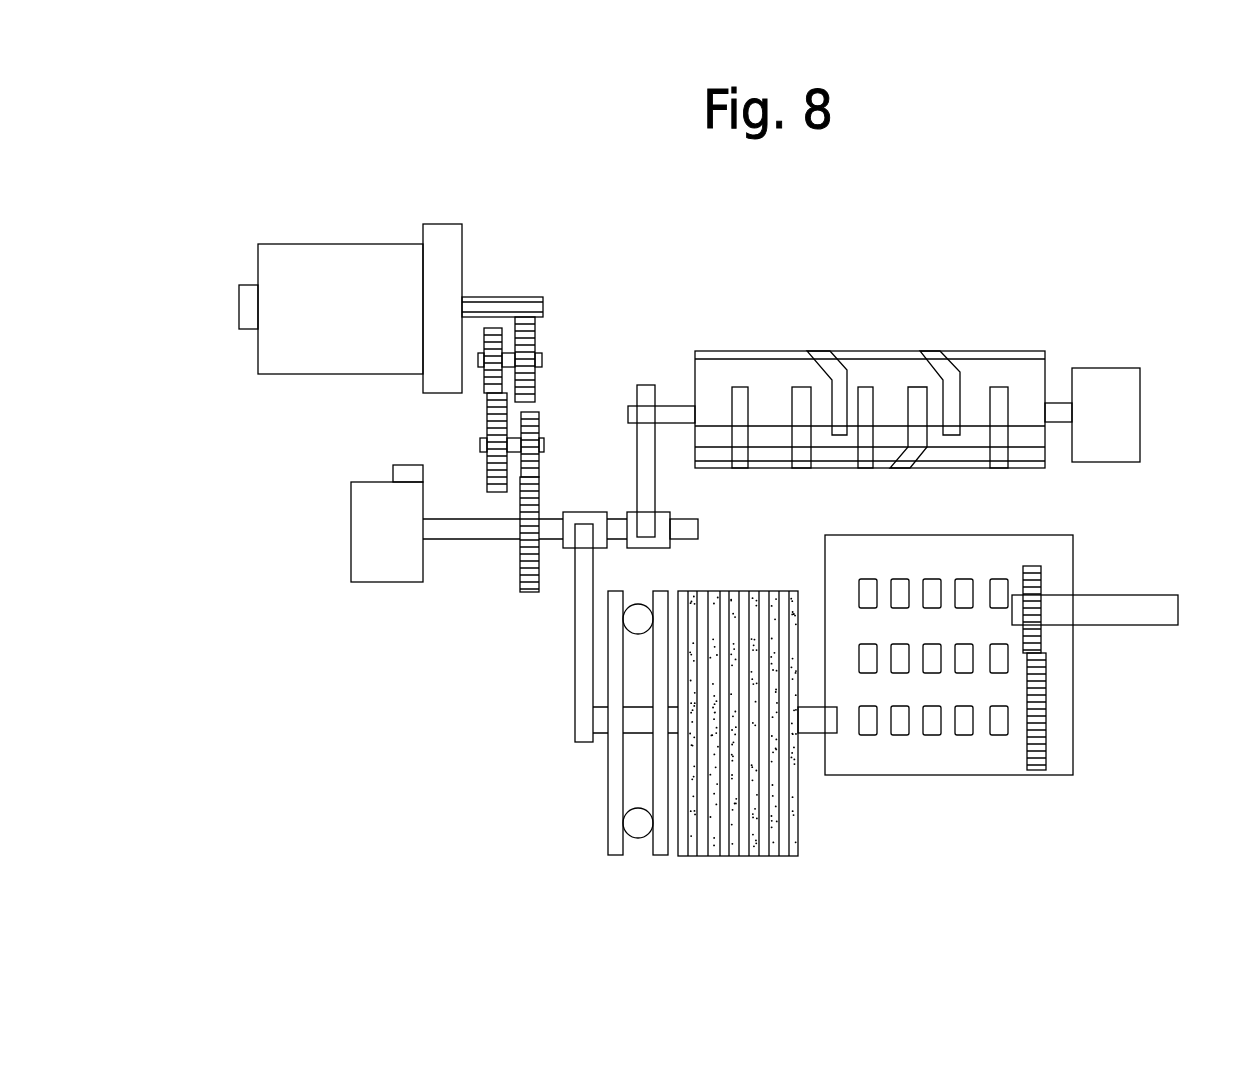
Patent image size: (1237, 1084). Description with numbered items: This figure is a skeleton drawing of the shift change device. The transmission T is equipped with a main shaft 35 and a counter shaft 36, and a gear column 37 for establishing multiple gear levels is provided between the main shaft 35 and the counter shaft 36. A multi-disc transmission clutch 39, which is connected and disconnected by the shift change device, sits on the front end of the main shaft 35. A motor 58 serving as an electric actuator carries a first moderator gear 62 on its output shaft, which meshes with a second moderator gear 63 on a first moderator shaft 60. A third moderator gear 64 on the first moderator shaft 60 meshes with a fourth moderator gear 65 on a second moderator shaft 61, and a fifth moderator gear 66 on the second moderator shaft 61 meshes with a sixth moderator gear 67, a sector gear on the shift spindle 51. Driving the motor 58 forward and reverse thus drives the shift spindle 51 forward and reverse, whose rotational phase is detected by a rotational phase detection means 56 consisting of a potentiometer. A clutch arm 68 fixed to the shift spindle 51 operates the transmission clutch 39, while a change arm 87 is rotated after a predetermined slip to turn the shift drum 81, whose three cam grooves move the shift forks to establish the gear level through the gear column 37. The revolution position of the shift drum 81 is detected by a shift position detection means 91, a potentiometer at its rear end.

The motor 58 is at (343, 327).
The rotational phase detection means 56 is at (408, 538).
The first moderator gear 62 is at (488, 299).
The second moderator gear 63 is at (532, 337).
The first moderator shaft 60 is at (543, 360).
The third moderator gear 64 is at (487, 383).
The fourth moderator gear 65 is at (493, 420).
The second moderator shaft 61 is at (544, 446).
The fifth moderator gear 66 is at (532, 418).
The sixth moderator gear 67 is at (522, 565).
The shift spindle 51 is at (698, 527).
The clutch arm 68 is at (575, 652).
The change arm 87 is at (655, 486).
The shift drum 81 is at (880, 350).
The shift position detection means 91 is at (1105, 378).
The transmission clutch 39 is at (721, 860).
The main shaft 35 is at (812, 722).
The gear column 37 is at (935, 578).
The counter shaft 36 is at (1118, 603).
The transmission T is at (932, 785).